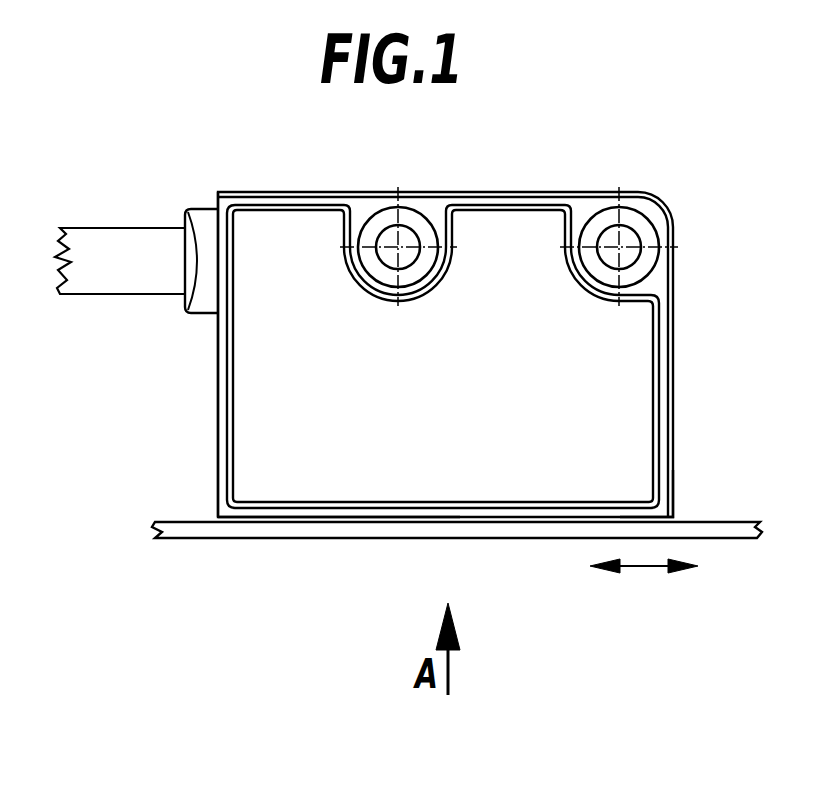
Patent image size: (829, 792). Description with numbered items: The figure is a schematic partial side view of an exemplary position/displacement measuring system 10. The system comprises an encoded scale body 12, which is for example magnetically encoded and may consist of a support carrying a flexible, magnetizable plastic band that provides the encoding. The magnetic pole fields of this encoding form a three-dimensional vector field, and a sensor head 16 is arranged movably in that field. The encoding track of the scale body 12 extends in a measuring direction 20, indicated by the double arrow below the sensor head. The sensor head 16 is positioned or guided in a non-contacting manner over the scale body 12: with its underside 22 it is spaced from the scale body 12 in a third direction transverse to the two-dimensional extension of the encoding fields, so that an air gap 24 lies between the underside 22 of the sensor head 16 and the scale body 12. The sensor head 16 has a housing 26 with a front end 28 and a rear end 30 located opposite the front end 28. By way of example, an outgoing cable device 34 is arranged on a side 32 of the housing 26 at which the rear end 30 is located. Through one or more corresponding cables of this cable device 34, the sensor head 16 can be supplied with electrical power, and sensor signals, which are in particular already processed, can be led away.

The position/displacement measuring system 10 is at (546, 154).
The scale body 12 is at (496, 525).
The sensor head 16 is at (638, 412).
The measuring direction 20 is at (645, 567).
The underside 22 is at (296, 518).
The air gap 24 is at (393, 518).
The housing 26 is at (638, 333).
The front end 28 is at (675, 498).
The rear end 30 is at (217, 443).
The side 32 is at (217, 368).
The outgoing cable device 34 is at (202, 220).